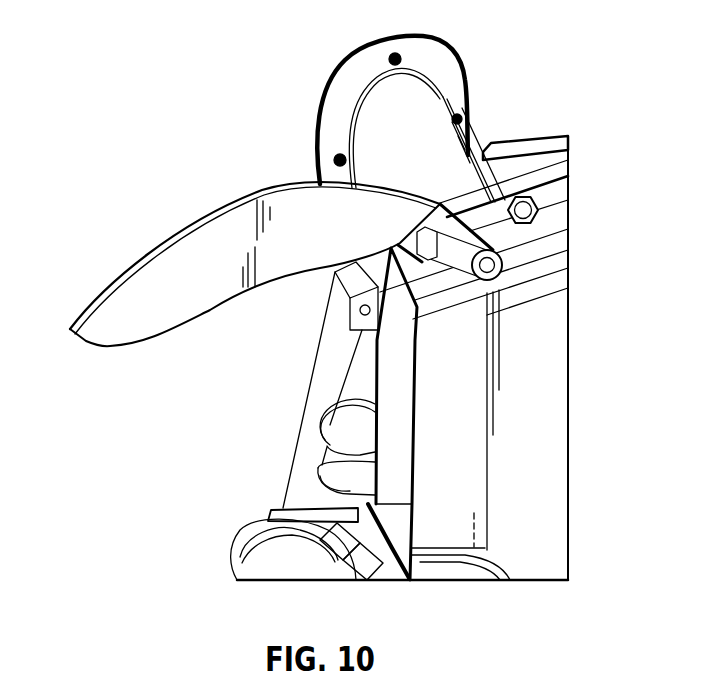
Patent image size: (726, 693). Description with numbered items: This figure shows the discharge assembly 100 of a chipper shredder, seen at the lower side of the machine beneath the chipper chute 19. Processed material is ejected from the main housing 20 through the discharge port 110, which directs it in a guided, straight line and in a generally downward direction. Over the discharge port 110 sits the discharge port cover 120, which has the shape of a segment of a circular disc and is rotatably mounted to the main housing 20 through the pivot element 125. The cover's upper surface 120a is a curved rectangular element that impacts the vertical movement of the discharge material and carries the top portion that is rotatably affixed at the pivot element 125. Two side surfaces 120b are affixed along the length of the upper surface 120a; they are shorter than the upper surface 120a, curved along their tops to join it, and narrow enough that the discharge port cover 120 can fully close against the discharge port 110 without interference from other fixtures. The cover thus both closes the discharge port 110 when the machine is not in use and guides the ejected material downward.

The discharge assembly 100 is at (188, 66).
The chipper chute 19 is at (464, 133).
The discharge port cover 120 is at (236, 268).
The upper surface 120a is at (127, 267).
The side surfaces 120b is at (140, 323).
The pivot element 125 is at (487, 265).
The main housing 20 is at (442, 365).
The discharge port 110 is at (412, 490).